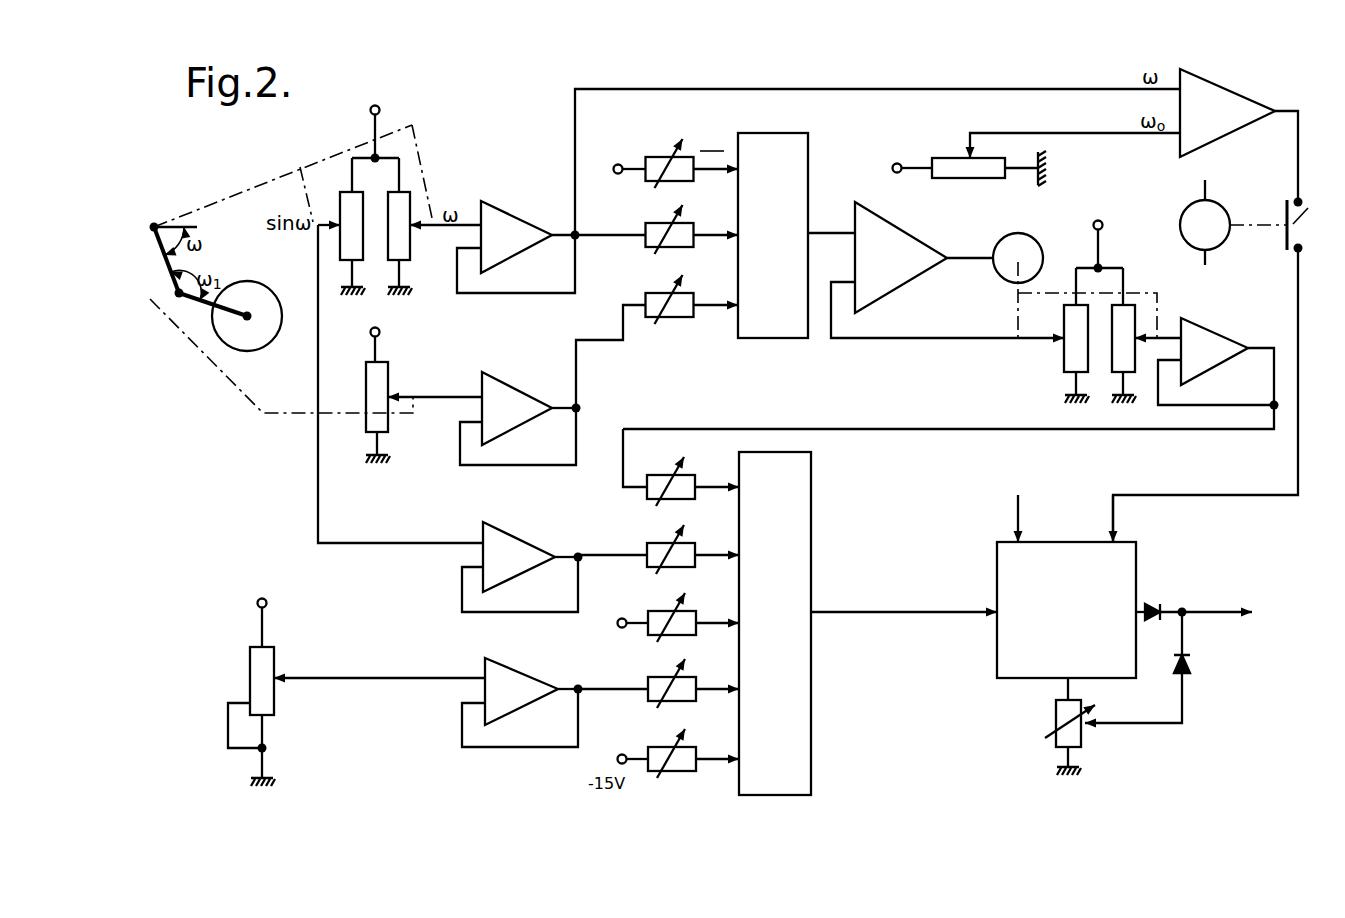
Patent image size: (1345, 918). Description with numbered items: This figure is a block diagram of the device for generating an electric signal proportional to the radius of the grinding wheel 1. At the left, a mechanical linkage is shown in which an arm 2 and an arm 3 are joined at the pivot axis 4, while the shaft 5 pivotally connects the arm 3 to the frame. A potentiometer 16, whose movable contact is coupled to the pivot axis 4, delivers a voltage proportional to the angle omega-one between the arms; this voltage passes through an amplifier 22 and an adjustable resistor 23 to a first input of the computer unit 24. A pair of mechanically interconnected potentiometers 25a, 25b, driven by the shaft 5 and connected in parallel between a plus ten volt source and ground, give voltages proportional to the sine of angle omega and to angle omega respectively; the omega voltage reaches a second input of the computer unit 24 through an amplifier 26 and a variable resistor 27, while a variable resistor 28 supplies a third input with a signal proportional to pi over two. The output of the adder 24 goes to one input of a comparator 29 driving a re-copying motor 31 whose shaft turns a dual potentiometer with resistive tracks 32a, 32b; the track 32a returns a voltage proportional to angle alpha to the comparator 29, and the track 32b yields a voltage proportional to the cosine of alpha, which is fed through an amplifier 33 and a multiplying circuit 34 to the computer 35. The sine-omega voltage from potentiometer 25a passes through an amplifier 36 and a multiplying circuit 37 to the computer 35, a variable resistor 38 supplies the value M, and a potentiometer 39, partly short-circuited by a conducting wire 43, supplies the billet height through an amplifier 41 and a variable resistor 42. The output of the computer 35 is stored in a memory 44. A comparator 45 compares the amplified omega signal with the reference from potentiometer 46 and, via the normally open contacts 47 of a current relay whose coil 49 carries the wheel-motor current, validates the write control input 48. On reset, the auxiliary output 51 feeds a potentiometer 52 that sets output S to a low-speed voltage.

The grinding wheel 1 is at (267, 340).
The arm 2 is at (210, 307).
The arm 3 is at (165, 268).
The pivot axis 4 is at (177, 298).
The shaft 5 is at (156, 223).
The potentiometer 16 is at (360, 367).
The amplifier 22 is at (527, 402).
The adjustable resistor 23 is at (672, 316).
The computer unit 24 is at (776, 137).
The potentiometer 25a is at (326, 186).
The potentiometer 25b is at (414, 187).
The amplifier 26 is at (516, 228).
The variable resistor 27 is at (646, 229).
The variable resistor 28 is at (657, 155).
The comparator 29 is at (908, 246).
The re-copying motor 31 is at (1000, 250).
The resistive track 32a is at (1072, 357).
The resistive track 32b is at (1130, 312).
The amplifier 33 is at (1222, 349).
The multiplying circuit 34 is at (688, 493).
The computer 35 is at (803, 500).
The amplifier 36 is at (507, 542).
The multiplying circuit 37 is at (690, 563).
The variable resistor 38 is at (690, 632).
The potentiometer 39 is at (246, 661).
The amplifier 41 is at (522, 681).
The variable resistor 42 is at (648, 698).
The conducting wire 43 is at (228, 728).
The memory 44 is at (1003, 651).
The comparator 45 is at (1229, 101).
The potentiometer 46 is at (970, 180).
The normally open contacts 47 is at (1220, 361).
The write control input 48 is at (1118, 528).
The coil 49 is at (1212, 209).
The auxiliary output 51 is at (1068, 690).
The potentiometer 52 is at (1075, 735).